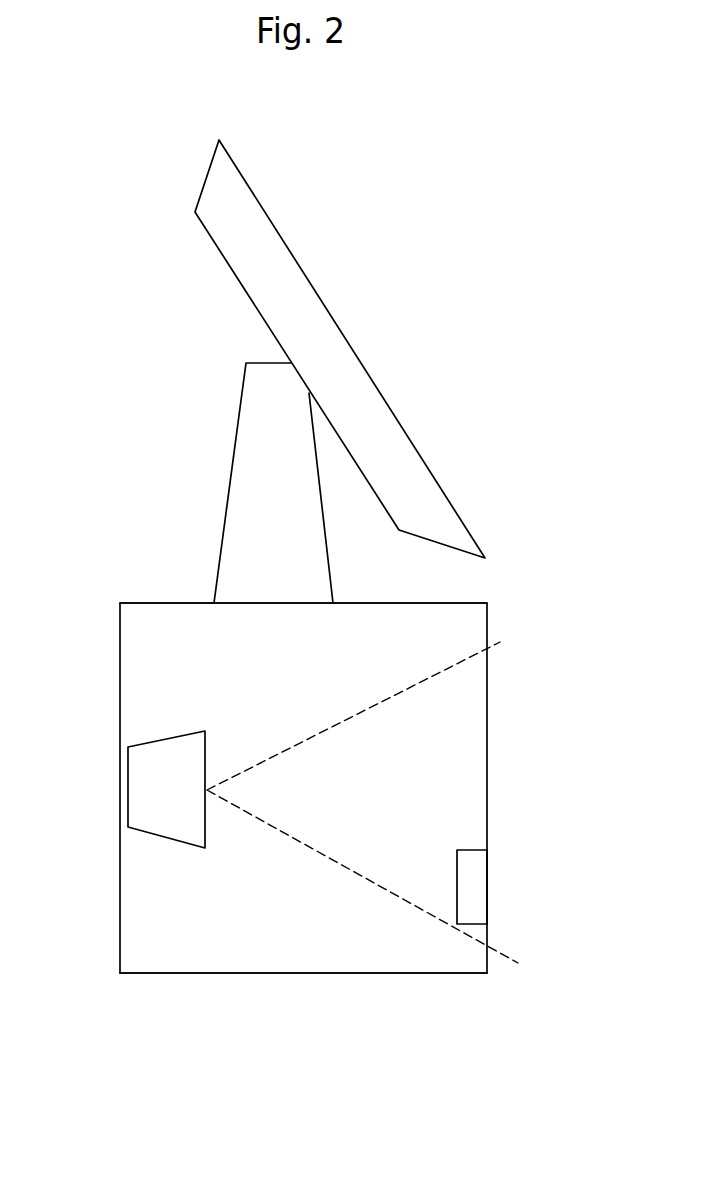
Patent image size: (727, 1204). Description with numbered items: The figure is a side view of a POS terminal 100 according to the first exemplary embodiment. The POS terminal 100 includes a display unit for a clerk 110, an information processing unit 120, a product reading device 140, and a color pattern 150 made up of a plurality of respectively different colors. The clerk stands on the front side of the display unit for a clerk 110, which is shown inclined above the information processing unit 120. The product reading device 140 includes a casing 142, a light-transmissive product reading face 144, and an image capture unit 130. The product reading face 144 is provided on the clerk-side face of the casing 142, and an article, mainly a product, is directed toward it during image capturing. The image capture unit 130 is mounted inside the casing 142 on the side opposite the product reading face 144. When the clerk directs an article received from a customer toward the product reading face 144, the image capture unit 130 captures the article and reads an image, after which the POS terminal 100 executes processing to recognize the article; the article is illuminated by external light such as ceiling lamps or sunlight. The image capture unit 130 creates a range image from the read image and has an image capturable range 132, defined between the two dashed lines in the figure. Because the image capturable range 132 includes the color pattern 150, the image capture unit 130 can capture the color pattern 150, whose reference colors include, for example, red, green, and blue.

The POS terminal 100 is at (532, 218).
The display unit for a clerk 110 is at (410, 436).
The information processing unit 120 is at (222, 545).
The image capture unit 130 is at (138, 787).
The image capturable range 132 is at (431, 676).
The product reading device 140 is at (220, 958).
The casing 142 is at (437, 981).
The product reading face 144 is at (491, 615).
The color pattern 150 is at (473, 877).